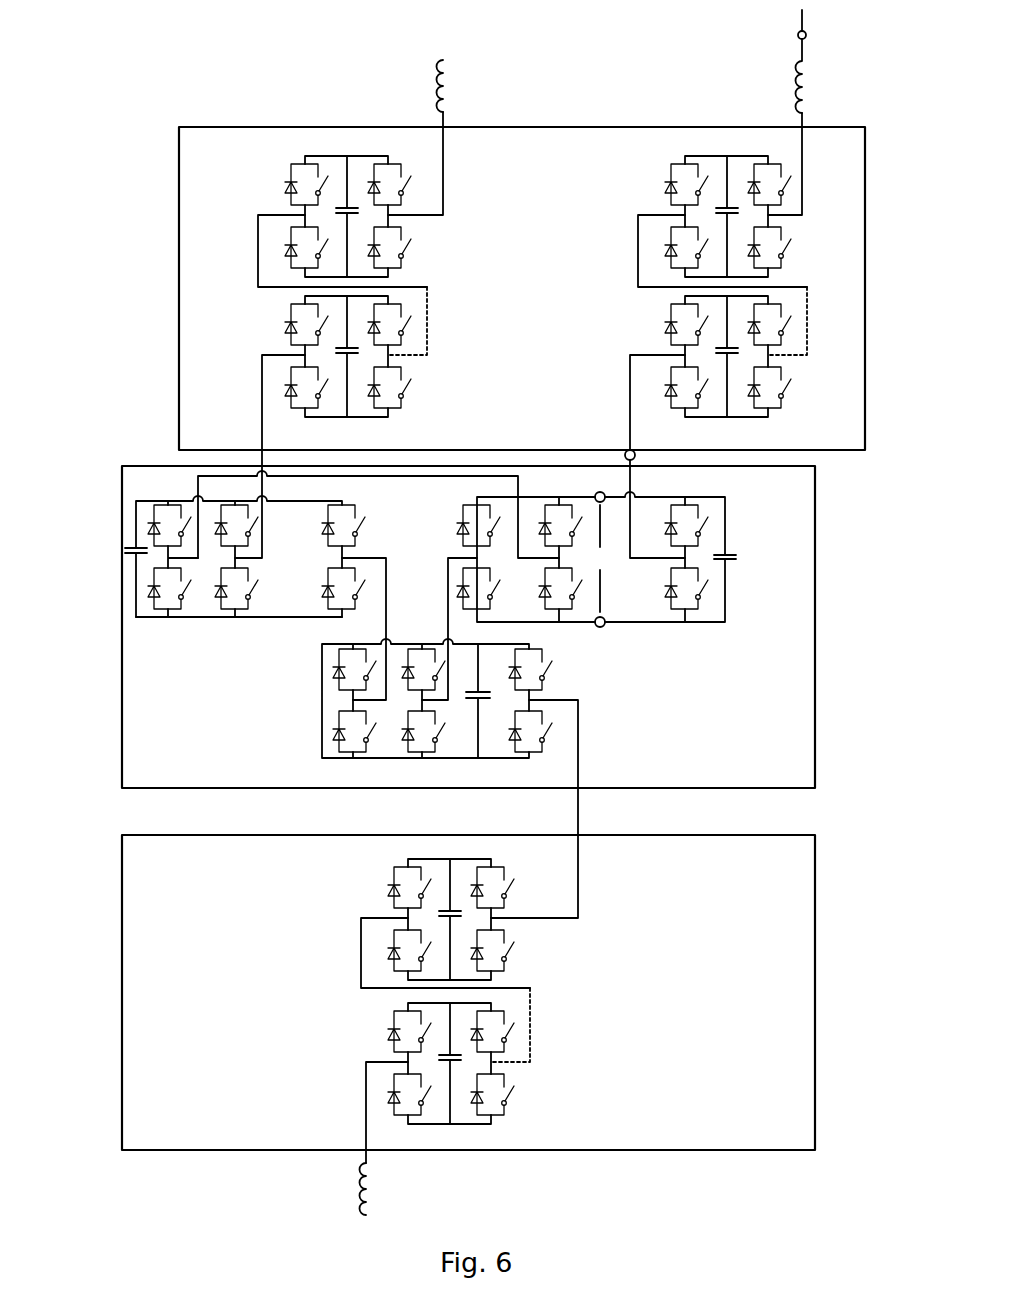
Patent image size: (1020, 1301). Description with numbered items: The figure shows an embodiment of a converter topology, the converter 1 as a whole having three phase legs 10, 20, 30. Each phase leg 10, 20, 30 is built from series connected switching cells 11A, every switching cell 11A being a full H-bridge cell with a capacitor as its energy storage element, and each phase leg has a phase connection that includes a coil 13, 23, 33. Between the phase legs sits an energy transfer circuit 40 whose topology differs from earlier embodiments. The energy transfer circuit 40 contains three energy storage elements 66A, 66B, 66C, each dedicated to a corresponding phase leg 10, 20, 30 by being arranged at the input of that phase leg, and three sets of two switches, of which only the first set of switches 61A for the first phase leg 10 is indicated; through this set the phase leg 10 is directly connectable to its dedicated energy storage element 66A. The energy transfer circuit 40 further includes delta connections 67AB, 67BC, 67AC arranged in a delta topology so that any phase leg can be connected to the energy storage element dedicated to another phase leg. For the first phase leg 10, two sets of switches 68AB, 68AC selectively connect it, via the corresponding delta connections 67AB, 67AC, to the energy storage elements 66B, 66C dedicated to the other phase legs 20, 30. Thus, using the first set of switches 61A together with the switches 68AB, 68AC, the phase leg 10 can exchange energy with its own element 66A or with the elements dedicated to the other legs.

The power converter system 1 is at (148, 100).
The phase leg 10 is at (343, 112).
The coil 13 is at (448, 70).
The phase leg 20 is at (718, 115).
The coil 23 is at (806, 77).
The switching cell 11A is at (263, 195).
The energy transfer circuit 40 is at (783, 686).
The energy storage element 66A is at (122, 560).
The energy storage element 66B is at (712, 556).
The energy storage element 66C is at (466, 700).
The first set of switches 61A is at (230, 627).
The delta connection 67AB is at (417, 474).
The delta connection 67AC is at (387, 630).
The delta connection 67BC is at (448, 630).
The set of switches 68AB is at (147, 600).
The set of switches 68AC is at (375, 580).
The phase leg 30 is at (462, 1163).
The coil 33 is at (358, 1198).